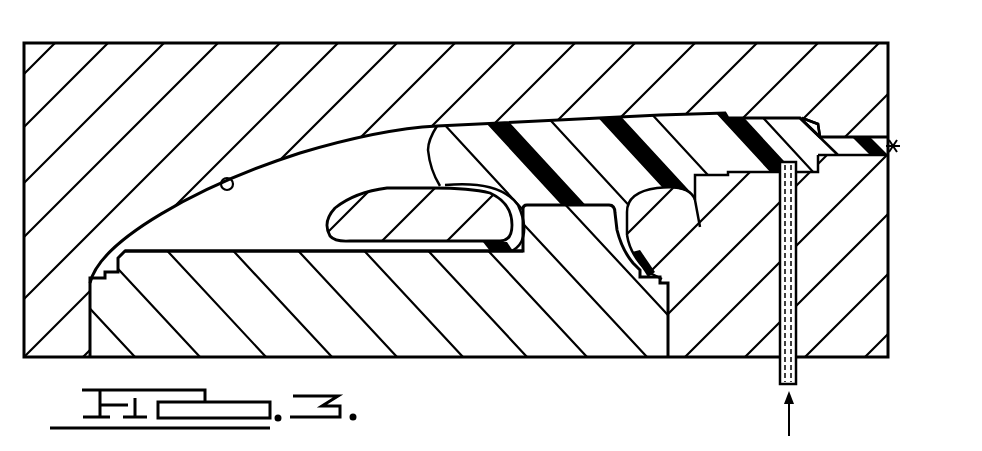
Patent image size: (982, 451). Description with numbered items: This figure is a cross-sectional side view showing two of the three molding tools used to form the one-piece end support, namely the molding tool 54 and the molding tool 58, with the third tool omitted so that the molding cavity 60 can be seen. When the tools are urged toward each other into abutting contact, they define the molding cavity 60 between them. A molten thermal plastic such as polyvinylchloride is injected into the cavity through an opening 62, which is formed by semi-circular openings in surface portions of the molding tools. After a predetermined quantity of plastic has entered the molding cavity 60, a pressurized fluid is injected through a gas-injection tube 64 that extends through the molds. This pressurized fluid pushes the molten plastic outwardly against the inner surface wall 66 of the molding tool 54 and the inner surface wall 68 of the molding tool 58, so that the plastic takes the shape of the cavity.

The molding tool 54 is at (238, 58).
The molding tool 58 is at (437, 345).
The molding cavity 60 is at (360, 178).
The opening 62 is at (836, 143).
The gas-injection tube 64 is at (798, 377).
The inner surface wall 66 is at (222, 179).
The inner surface wall 68 is at (220, 251).